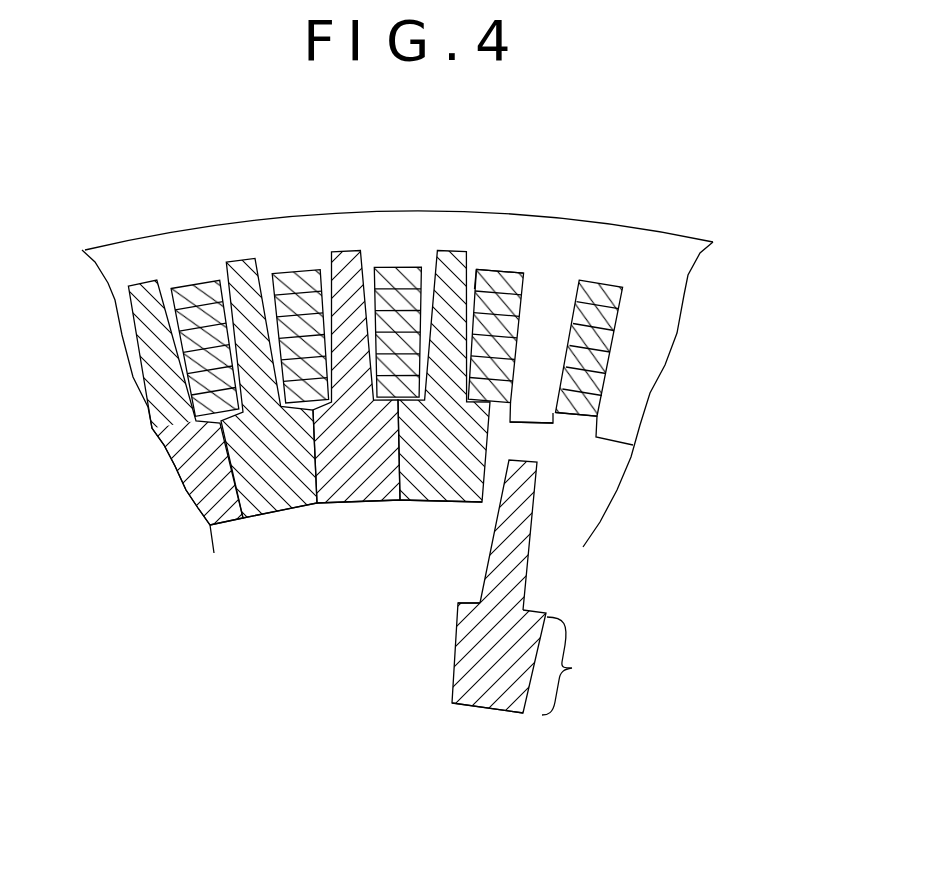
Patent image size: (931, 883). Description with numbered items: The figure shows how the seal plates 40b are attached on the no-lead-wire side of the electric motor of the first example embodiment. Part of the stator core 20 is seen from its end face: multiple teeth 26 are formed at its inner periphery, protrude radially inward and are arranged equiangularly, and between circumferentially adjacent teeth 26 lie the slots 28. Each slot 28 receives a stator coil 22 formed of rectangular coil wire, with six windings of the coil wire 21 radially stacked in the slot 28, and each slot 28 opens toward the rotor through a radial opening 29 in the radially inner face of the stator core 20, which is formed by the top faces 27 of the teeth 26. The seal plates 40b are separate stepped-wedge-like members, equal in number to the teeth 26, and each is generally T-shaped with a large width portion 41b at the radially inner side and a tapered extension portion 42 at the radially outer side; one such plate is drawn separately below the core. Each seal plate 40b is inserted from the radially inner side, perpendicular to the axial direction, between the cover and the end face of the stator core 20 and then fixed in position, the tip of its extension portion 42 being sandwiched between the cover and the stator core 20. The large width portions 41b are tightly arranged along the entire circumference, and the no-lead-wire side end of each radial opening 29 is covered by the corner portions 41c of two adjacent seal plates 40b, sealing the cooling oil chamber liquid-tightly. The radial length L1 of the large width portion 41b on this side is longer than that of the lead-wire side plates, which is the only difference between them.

The stator core 20 is at (412, 199).
The coil wire 21 is at (513, 300).
The stator coil 22 is at (520, 255).
The tooth 26 is at (560, 357).
The top face 27 is at (538, 424).
The slot 28 is at (488, 265).
The radial opening 29 is at (576, 423).
The seal plate 40b is at (288, 511).
The large width portion 41b is at (452, 658).
The corner portion 41c is at (461, 614).
The extension portion 42 is at (487, 565).
The radial length L1 is at (574, 666).